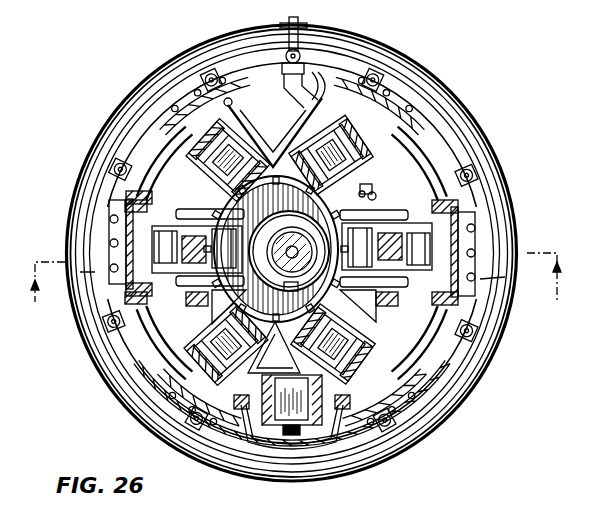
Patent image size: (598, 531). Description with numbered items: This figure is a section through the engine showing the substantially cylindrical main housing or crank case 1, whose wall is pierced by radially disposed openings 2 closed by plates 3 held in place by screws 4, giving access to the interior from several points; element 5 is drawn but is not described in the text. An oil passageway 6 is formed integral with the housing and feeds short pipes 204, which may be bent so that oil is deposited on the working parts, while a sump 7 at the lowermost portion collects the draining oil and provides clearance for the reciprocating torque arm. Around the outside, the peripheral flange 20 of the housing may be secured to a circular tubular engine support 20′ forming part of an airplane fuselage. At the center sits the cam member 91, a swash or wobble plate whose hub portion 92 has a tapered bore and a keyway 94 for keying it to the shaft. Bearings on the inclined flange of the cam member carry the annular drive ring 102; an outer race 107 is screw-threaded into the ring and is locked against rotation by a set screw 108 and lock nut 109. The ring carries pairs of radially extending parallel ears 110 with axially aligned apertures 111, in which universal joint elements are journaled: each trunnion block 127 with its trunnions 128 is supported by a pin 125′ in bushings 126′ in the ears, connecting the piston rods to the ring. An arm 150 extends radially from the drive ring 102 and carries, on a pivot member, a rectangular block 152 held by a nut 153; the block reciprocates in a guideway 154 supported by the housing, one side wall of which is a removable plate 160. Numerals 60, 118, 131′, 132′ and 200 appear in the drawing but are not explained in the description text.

The main housing 1 is at (452, 165).
The radially disposed openings 2 is at (470, 230).
The plates 3 is at (505, 277).
The screws 4 is at (478, 254).
The section line 5 is at (292, 282).
The oil passageway 6 is at (316, 78).
The sump 7 is at (278, 452).
The peripheral flange 20 is at (492, 352).
The tubular engine support 20′ is at (486, 388).
The frame web 60 is at (215, 290).
The cam member 91 is at (206, 213).
The hub portion 92 is at (360, 296).
The keyway 94 is at (274, 347).
The annular drive ring 102 is at (190, 302).
The outer race 107 is at (180, 280).
The set screw 108 is at (250, 98).
The lock nut 109 is at (372, 190).
The radially extending parallel ears 110 is at (352, 126).
The axially aligned apertures 111 is at (378, 324).
The support bar 118 is at (430, 103).
The pin 125′ is at (132, 320).
The bushings 126′ is at (162, 338).
The trunnion block 127 is at (180, 126).
The trunnions 128 is at (215, 100).
The inner wall 131′ is at (222, 100).
The inner wall 132′ is at (202, 103).
The arm 150 is at (236, 440).
The rectangular block 152 is at (320, 470).
The nut 153 is at (296, 460).
The guideway 154 is at (258, 450).
The plate 160 is at (378, 446).
The inlet fitting 200 is at (286, 23).
The short pipes 204 is at (292, 98).